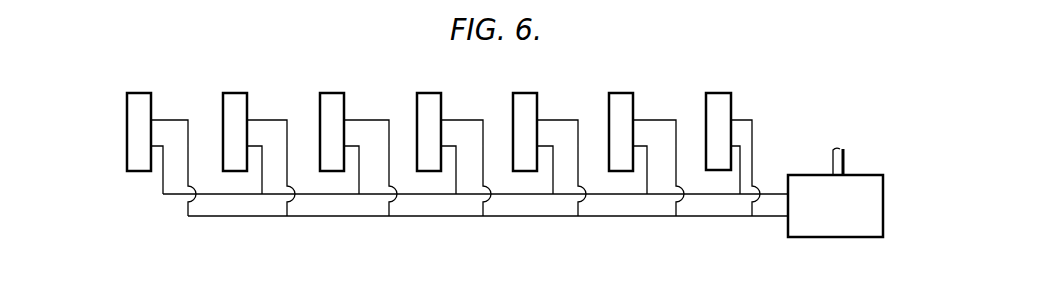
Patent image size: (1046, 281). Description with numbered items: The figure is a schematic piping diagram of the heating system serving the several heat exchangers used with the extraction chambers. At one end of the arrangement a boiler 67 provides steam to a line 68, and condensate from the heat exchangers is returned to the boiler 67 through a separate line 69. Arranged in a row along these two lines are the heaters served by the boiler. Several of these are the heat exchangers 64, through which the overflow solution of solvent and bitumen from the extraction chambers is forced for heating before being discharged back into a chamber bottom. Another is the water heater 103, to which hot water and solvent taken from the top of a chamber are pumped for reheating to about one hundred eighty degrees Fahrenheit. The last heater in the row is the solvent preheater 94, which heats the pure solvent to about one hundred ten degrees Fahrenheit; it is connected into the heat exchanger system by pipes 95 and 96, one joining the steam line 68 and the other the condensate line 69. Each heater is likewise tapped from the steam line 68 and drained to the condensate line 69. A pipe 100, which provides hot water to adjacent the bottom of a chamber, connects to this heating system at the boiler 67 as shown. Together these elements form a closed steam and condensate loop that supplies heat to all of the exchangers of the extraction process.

The heat exchanger 64 is at (142, 93).
The water heater 103 is at (627, 95).
The solvent preheater 94 is at (722, 93).
The pipe 95 is at (752, 147).
The pipe 96 is at (740, 186).
The line 69 is at (174, 195).
The line 68 is at (420, 217).
The boiler 67 is at (843, 224).
The pipe 100 is at (845, 168).